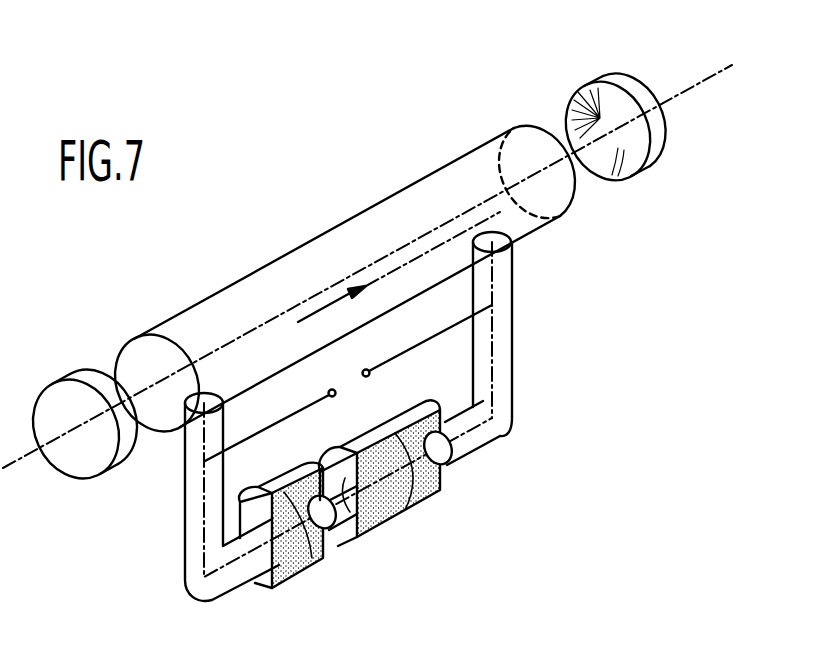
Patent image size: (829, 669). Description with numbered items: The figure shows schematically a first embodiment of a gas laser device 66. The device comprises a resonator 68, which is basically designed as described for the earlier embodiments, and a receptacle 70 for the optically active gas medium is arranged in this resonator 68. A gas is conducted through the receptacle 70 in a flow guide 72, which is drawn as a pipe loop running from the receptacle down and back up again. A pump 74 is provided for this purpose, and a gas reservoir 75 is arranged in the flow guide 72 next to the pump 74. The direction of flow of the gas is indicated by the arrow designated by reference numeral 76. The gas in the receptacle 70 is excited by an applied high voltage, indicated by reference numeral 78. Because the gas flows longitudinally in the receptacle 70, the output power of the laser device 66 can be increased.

The gas laser device 66 is at (436, 113).
The resonator 68 is at (320, 204).
The receptacle 70 is at (200, 308).
The flow guide 72 is at (185, 511).
The pump 74 is at (313, 560).
The gas reservoir 75 is at (400, 511).
The arrow indicating direction of flow 76 is at (528, 362).
The applied high voltage 78 is at (372, 374).